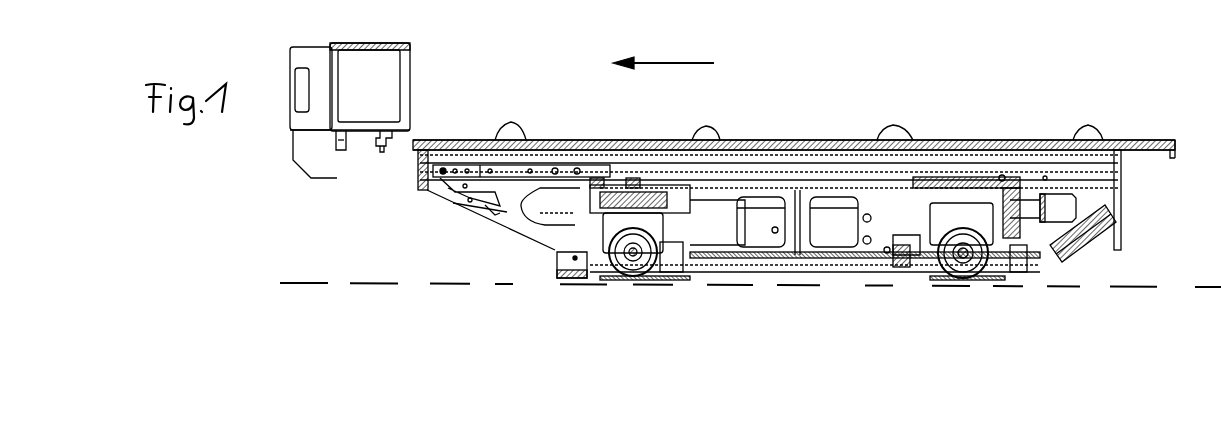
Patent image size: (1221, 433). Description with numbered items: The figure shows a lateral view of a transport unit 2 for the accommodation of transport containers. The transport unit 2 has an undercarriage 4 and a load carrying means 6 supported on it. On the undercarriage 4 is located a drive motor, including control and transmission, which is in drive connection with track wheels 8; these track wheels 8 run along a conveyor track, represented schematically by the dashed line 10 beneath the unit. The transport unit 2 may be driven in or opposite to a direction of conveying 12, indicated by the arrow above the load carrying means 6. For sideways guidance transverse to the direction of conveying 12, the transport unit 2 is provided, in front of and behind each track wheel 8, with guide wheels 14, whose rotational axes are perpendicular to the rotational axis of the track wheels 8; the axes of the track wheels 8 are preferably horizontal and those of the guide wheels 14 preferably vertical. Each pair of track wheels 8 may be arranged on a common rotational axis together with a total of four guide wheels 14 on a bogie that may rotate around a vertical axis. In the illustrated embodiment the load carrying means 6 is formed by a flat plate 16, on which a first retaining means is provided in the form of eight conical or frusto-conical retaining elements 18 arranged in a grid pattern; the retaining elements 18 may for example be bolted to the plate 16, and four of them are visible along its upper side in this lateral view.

The transport unit 2 is at (296, 216).
The undercarriage 4 is at (1093, 176).
The load carrying means 6 is at (1006, 141).
The track wheels 8 is at (636, 280).
The conveyor track 10 is at (373, 284).
The direction of conveying 12 is at (713, 63).
The guide wheels 14 is at (570, 236).
The flat plate 16 is at (1137, 148).
The retaining elements 18 is at (501, 134).